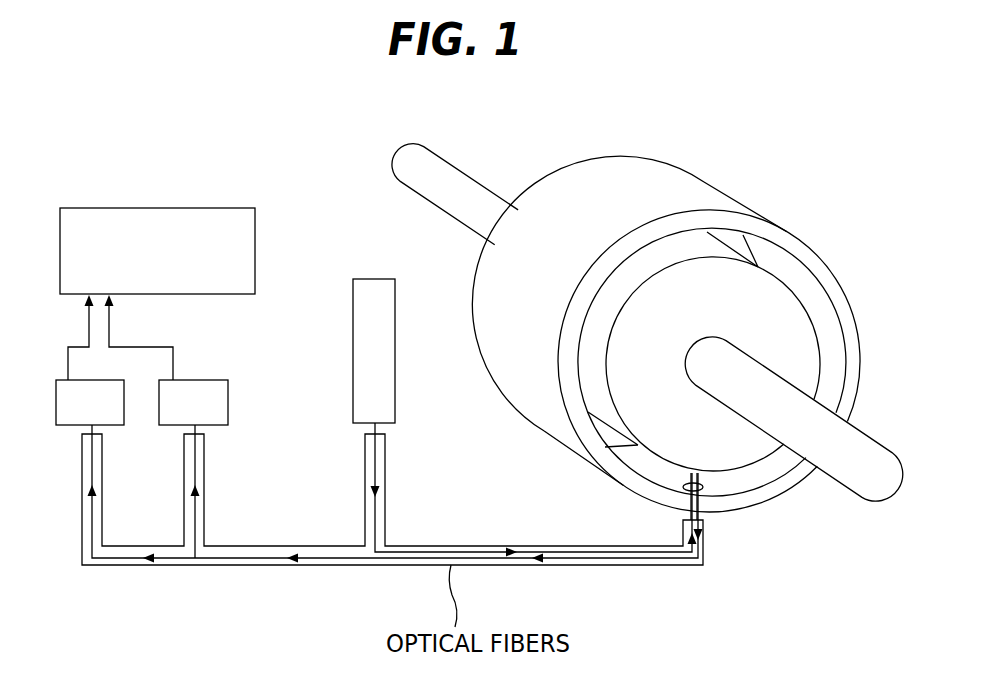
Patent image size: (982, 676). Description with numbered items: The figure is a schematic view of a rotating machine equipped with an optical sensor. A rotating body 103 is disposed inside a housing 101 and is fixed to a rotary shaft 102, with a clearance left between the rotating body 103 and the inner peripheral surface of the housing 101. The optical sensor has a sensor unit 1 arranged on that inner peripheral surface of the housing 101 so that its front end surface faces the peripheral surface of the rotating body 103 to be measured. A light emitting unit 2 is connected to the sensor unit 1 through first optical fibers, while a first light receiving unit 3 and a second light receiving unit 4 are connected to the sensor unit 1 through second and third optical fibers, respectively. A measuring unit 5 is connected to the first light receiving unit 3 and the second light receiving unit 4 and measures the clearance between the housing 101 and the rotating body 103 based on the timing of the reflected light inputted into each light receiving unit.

The sensor unit 1 is at (699, 478).
The light emitting unit 2 is at (367, 380).
The first light receiving unit 3 is at (65, 410).
The second light receiving unit 4 is at (222, 408).
The measuring unit 5 is at (160, 218).
The housing 101 is at (697, 190).
The rotary shaft 102 is at (875, 483).
The rotating body 103 is at (627, 380).